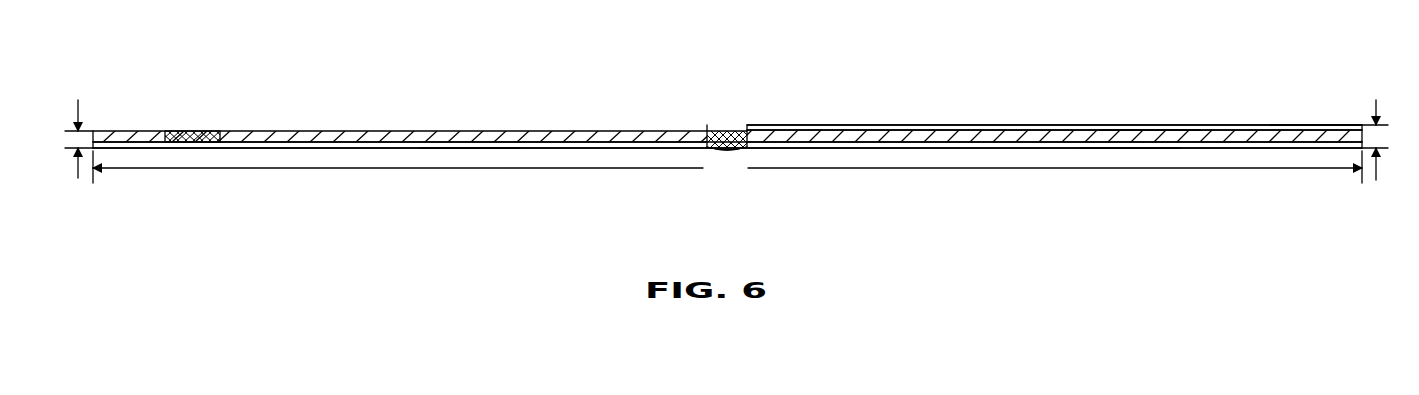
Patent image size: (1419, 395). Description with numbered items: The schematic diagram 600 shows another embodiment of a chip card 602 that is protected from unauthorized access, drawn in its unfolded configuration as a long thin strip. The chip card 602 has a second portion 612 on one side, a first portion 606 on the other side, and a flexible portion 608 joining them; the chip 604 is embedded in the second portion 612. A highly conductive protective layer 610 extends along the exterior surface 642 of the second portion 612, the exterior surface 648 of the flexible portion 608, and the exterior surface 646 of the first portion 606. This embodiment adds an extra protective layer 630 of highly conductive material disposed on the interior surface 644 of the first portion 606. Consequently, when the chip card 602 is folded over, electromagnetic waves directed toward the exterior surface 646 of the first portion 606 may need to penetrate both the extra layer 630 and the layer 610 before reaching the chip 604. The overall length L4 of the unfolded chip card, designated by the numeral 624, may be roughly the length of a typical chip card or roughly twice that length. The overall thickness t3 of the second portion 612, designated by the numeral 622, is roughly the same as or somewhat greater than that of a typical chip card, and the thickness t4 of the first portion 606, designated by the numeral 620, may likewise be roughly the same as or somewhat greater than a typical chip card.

The schematic diagram 600 is at (1276, 62).
The chip card 602 is at (1310, 103).
The chip 604 is at (190, 136).
The first portion 606 is at (1145, 140).
The flexible portion 608 is at (723, 137).
The highly conductive protective layer 610 is at (1052, 144).
The second portion 612 is at (548, 133).
The thickness t4 620 is at (1398, 118).
The thickness t3 622 is at (47, 125).
The overall length L4 624 is at (722, 188).
The extra protective layer 630 is at (925, 128).
The exterior surface of second portion 642 is at (465, 145).
The interior surface of first portion 644 is at (1217, 128).
The exterior surface of first portion 646 is at (1122, 144).
The exterior surface of flexible portion 648 is at (715, 148).